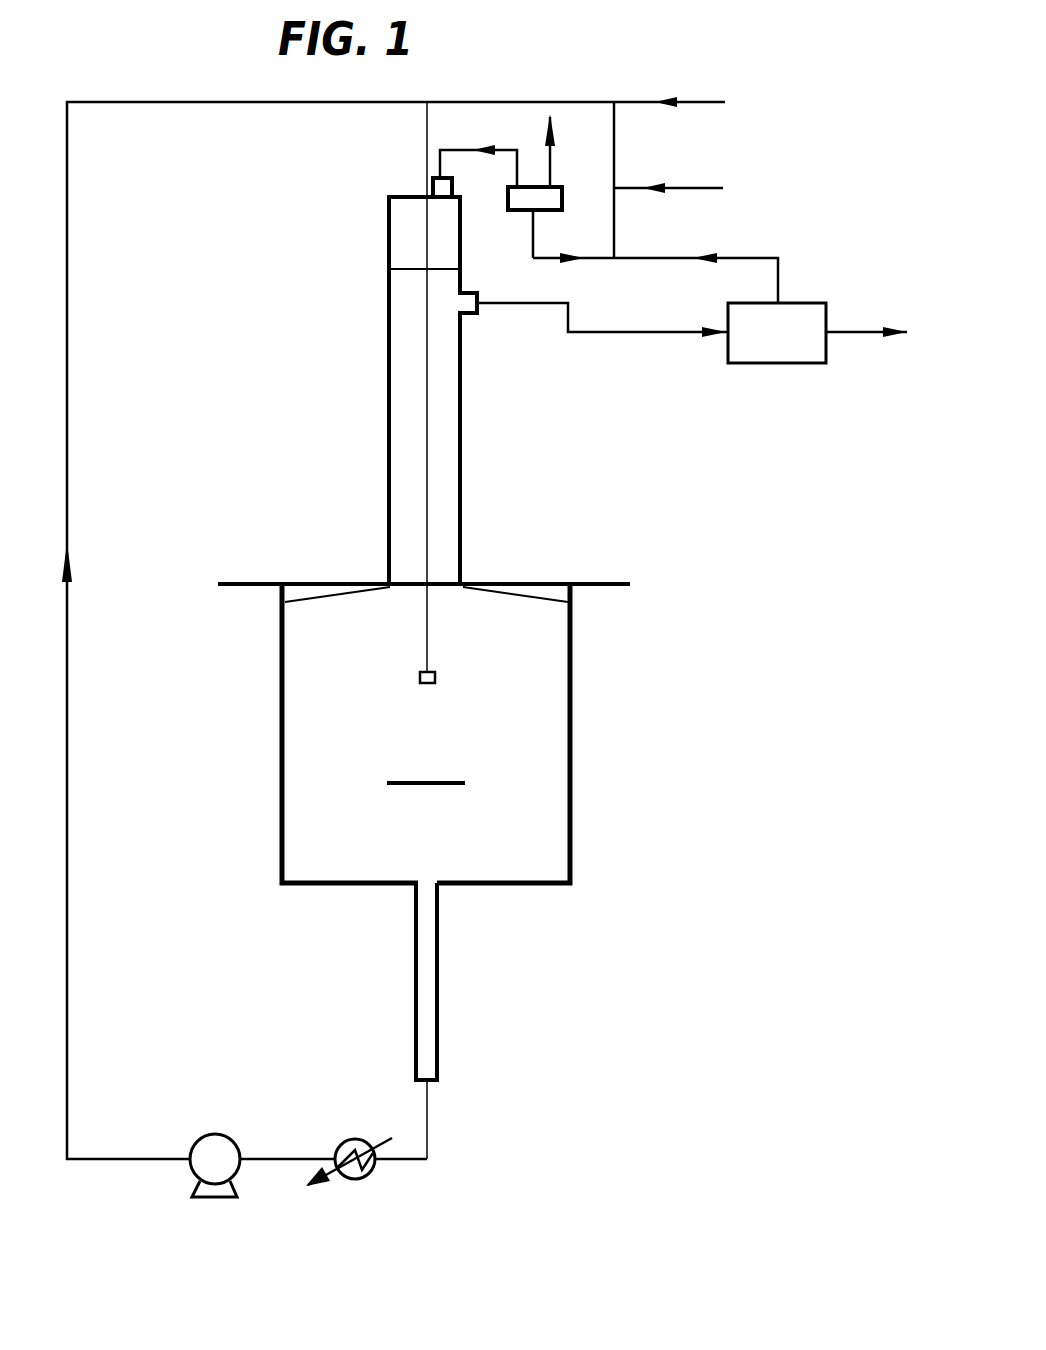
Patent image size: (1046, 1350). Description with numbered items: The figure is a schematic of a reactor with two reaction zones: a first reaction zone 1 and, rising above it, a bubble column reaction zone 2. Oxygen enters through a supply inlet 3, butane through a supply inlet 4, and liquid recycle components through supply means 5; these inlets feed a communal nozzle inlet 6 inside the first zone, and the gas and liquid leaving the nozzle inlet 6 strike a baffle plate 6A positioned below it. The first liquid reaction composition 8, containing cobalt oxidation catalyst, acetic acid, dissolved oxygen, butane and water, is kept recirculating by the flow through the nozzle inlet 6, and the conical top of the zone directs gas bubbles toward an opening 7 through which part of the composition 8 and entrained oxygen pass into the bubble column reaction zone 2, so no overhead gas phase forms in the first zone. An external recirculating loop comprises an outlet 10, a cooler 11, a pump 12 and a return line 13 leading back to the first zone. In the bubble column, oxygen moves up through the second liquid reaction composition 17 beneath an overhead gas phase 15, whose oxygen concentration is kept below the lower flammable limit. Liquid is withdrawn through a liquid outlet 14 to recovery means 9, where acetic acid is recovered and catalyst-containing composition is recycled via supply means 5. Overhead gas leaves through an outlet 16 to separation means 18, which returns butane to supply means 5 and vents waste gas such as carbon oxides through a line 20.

The first reaction zone 1 is at (571, 740).
The bubble column reaction zone 2 is at (463, 443).
The supply inlet for oxygen 3 is at (693, 102).
The supply inlet for butane 4 is at (693, 188).
The supply means for liquid recycle components 5 is at (615, 237).
The communal nozzle inlet 6 is at (417, 677).
The baffle means 6A is at (448, 787).
The opening 7 is at (448, 585).
The first liquid reaction composition 8 is at (517, 690).
The recovery means 9 is at (780, 343).
The outlet 10 is at (427, 885).
The cooler 11 is at (365, 1175).
The pump 12 is at (217, 1155).
The return line 13 is at (165, 103).
The liquid outlet 14 is at (628, 332).
The overhead gas phase 15 is at (405, 240).
The overhead gas phase outlet 16 is at (442, 178).
The second liquid reaction composition 17 is at (408, 430).
The separation means 18 is at (562, 200).
The line 20 is at (550, 165).